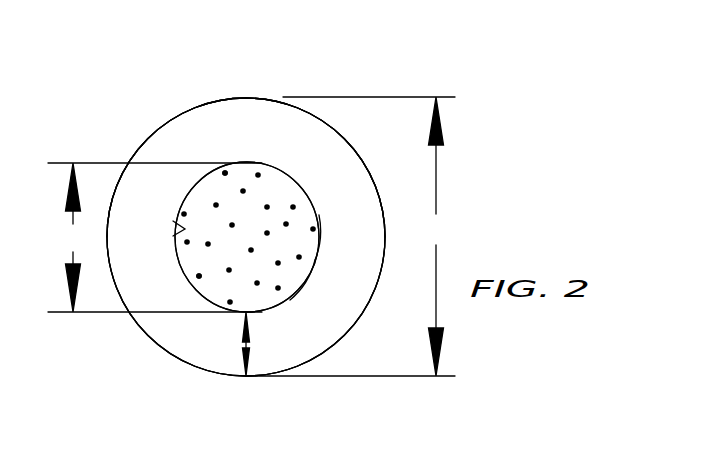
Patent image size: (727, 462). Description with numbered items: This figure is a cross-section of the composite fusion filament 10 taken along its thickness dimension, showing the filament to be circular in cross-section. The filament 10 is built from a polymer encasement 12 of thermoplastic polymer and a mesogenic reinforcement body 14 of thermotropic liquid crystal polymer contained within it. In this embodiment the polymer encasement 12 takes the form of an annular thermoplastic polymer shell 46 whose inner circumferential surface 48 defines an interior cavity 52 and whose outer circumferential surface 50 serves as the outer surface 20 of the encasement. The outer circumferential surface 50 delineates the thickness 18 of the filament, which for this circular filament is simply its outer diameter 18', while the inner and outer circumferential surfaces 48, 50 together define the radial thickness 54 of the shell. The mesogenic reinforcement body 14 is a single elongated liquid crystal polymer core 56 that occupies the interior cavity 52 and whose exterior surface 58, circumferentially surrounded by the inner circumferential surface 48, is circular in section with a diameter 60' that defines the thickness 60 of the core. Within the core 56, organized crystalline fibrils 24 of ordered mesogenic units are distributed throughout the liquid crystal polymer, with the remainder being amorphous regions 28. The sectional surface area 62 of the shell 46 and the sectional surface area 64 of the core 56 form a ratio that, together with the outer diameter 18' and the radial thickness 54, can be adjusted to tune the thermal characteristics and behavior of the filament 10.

The composite fusion filament 10 is at (104, 74).
The polymer encasement 12 is at (230, 104).
The mesogenic reinforcement body 14 is at (312, 181).
The thickness 18 is at (356, 236).
The outer diameter 18' is at (356, 236).
The outer surface 20 is at (251, 206).
The outer circumferential surface 50 is at (307, 108).
The organized crystalline fibrils 24 is at (267, 207).
The amorphous regions 28 is at (293, 242).
The annular thermoplastic polymer shell 46 is at (262, 117).
The inner circumferential surface 48 is at (199, 278).
The interior cavity 52 is at (169, 233).
The radial thickness 54 is at (240, 345).
The elongated liquid crystal polymer core 56 is at (300, 223).
The exterior surface 58 is at (223, 171).
The thickness 60 is at (152, 237).
The diameter 60' is at (152, 237).
The sectional surface area 62 is at (162, 198).
The sectional surface area 64 is at (245, 260).